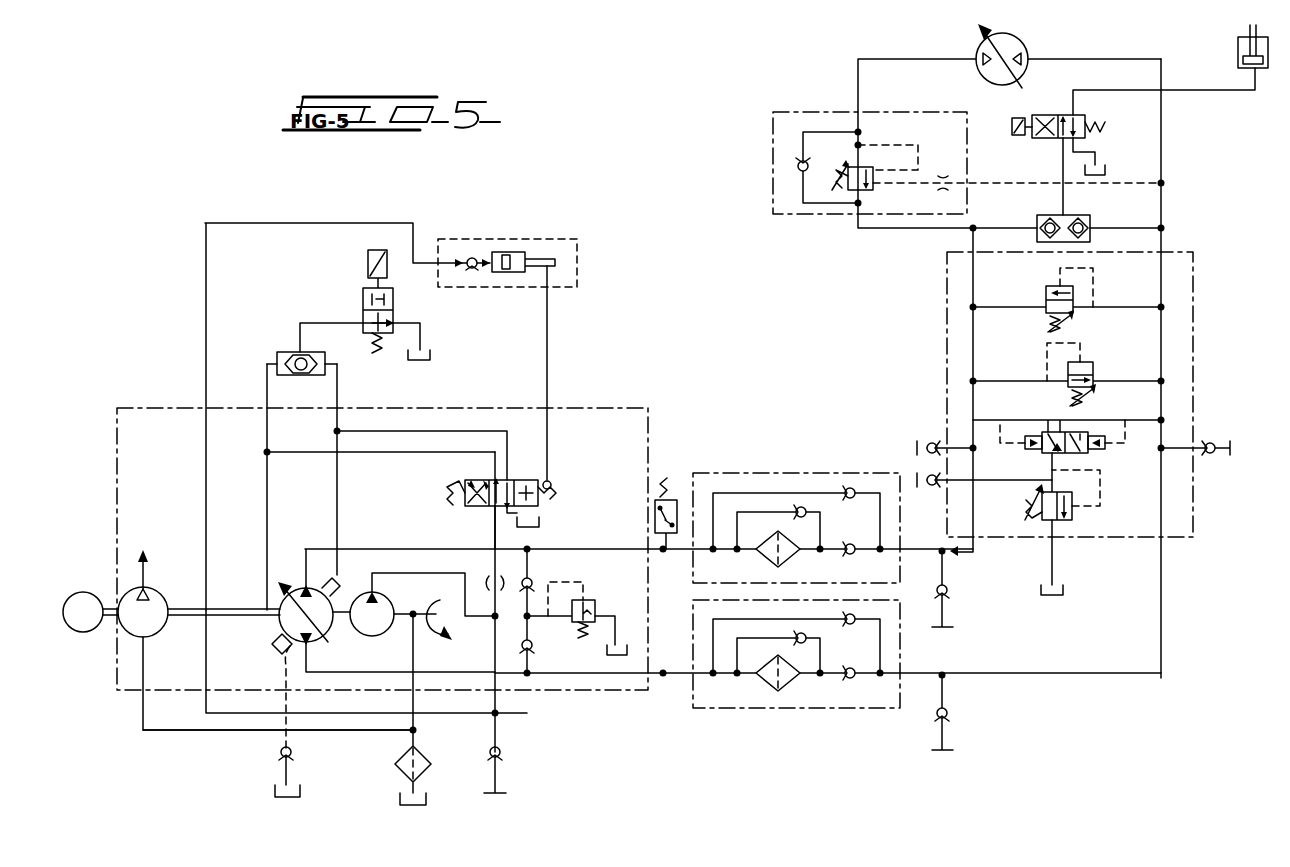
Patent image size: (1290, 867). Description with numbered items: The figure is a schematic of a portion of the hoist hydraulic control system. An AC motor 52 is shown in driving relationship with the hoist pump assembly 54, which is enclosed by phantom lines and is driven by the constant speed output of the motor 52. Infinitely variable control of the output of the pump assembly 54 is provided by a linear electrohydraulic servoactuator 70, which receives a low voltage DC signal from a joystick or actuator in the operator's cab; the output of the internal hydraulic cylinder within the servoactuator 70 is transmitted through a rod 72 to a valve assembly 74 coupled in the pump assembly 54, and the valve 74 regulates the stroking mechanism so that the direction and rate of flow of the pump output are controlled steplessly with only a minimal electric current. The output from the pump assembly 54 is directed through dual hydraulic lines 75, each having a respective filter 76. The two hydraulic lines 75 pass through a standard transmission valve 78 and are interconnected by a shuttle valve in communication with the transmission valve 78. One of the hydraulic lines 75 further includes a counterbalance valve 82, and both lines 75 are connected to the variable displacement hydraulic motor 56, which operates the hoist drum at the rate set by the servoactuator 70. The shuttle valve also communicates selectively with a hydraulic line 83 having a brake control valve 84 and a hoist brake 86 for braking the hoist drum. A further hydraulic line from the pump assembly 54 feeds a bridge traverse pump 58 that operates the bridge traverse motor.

The AC motor 52 is at (82, 592).
The hoist pump assembly 54 is at (167, 690).
The variable displacement hydraulic motor 56 is at (1018, 35).
The bridge traverse pump 58 is at (158, 603).
The linear electrohydraulic servoactuator 70 is at (493, 240).
The rod 72 is at (540, 252).
The valve assembly 74 is at (515, 478).
The hydraulic lines 75 is at (683, 555).
The filter 76 is at (783, 472).
The transmission valve 78 is at (1182, 505).
The counterbalance valve 82 is at (783, 192).
The hydraulic line 83 is at (1063, 165).
The brake control valve 84 is at (1055, 112).
The hoist brake 86 is at (1258, 70).